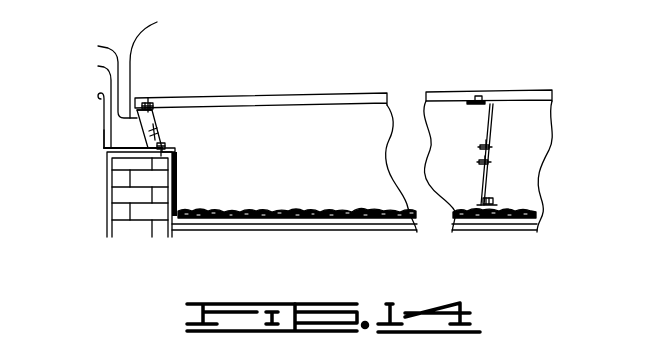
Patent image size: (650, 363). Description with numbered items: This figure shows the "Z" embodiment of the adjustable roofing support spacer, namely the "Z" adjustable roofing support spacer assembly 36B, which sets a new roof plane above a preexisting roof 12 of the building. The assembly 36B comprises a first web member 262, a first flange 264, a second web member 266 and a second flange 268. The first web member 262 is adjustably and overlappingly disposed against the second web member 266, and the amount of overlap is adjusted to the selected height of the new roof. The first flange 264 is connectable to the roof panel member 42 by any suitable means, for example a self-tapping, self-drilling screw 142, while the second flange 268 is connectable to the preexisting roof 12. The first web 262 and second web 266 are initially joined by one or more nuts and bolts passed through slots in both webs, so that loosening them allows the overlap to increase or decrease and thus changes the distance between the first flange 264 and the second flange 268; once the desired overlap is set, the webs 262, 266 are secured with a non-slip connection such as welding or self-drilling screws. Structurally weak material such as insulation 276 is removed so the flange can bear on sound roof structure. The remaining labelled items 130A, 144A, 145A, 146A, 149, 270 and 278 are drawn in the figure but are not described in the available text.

The preexisting roof 12 is at (252, 210).
The roof panel member 42 is at (294, 93).
The "Z" adjustable roofing support spacer assembly 36B is at (168, 125).
The flashing assembly 130A is at (95, 142).
The self-tapping, self-drilling screw 142 is at (150, 104).
The outer flashing sheet 144A is at (104, 116).
The intermediate flashing sheet 145A is at (92, 76).
The inner flashing sheet 146A is at (78, 101).
The masonry wall 149 is at (107, 183).
The first web member 262 is at (152, 110).
The first flange 264 is at (477, 105).
The second web member 266 is at (166, 148).
The second flange 268 is at (176, 151).
The floor deck 270 is at (285, 223).
The insulation 276 is at (481, 147).
The lower adjustment bolt 278 is at (482, 163).